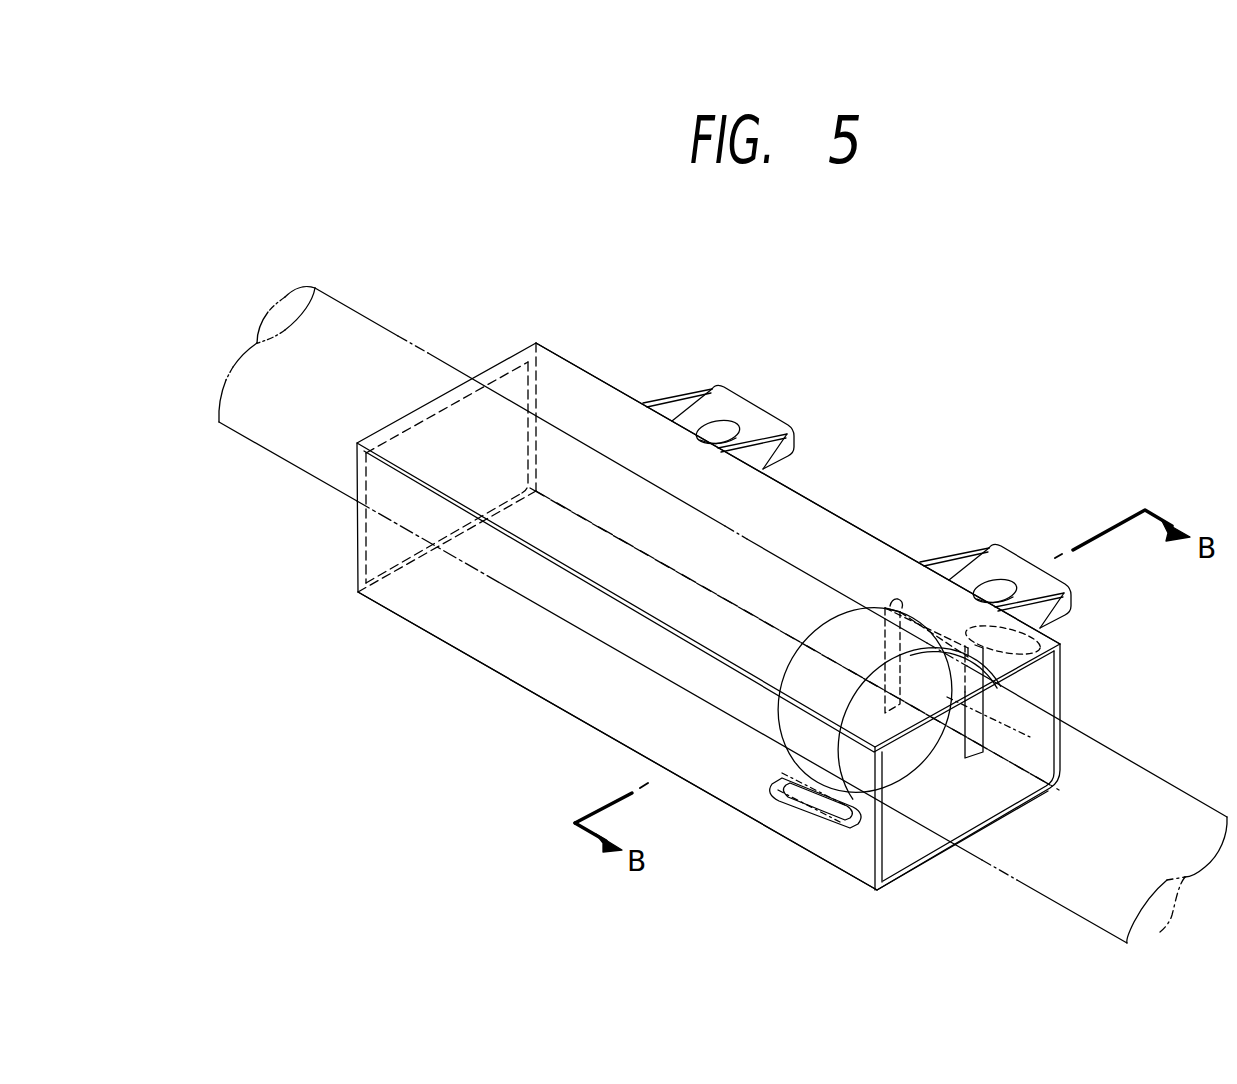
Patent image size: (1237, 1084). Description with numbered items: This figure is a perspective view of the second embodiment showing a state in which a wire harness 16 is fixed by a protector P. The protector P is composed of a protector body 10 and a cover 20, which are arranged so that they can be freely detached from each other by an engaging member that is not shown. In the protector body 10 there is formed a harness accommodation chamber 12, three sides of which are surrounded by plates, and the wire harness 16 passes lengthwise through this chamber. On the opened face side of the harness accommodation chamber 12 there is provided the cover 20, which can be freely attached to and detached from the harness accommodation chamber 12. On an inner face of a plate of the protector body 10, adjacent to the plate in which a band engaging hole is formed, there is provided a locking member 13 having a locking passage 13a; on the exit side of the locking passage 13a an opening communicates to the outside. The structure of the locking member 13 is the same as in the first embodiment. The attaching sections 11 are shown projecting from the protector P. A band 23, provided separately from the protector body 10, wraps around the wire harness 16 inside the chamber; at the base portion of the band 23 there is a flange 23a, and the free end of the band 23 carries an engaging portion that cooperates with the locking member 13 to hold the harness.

The protector P is at (553, 338).
The protector body 10 is at (458, 640).
The attaching section 11 is at (745, 408).
The harness accommodation chamber 12 is at (904, 847).
The locking member 13 is at (978, 728).
The locking passage 13a is at (1045, 634).
The wire harness 16 is at (1037, 883).
The cover 20 is at (605, 386).
The band 23 is at (837, 610).
The flange 23a is at (815, 830).